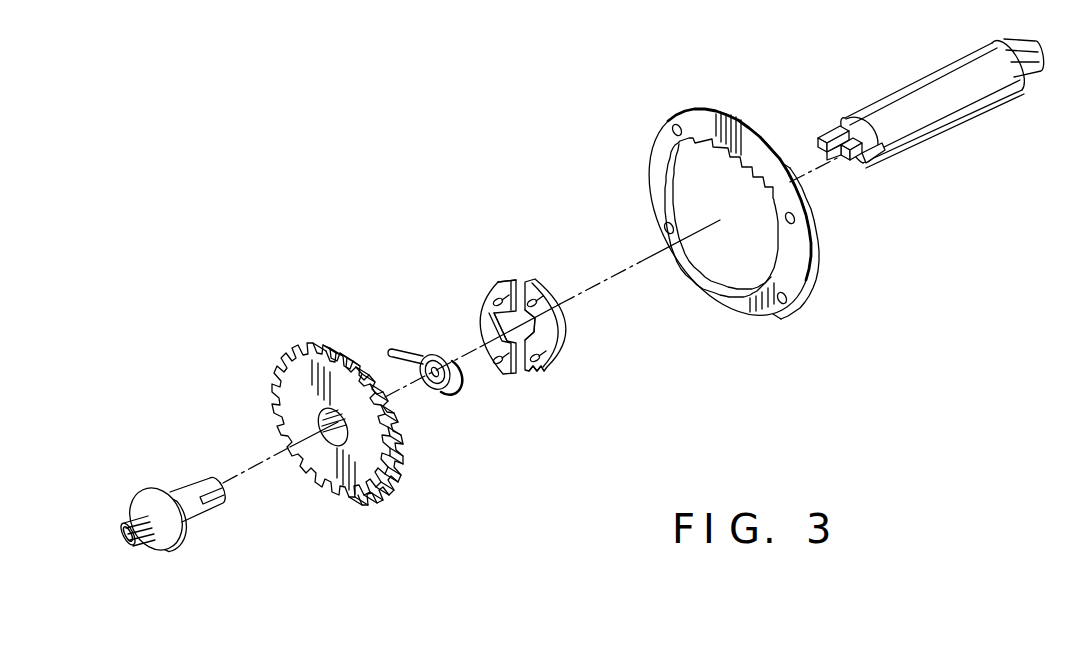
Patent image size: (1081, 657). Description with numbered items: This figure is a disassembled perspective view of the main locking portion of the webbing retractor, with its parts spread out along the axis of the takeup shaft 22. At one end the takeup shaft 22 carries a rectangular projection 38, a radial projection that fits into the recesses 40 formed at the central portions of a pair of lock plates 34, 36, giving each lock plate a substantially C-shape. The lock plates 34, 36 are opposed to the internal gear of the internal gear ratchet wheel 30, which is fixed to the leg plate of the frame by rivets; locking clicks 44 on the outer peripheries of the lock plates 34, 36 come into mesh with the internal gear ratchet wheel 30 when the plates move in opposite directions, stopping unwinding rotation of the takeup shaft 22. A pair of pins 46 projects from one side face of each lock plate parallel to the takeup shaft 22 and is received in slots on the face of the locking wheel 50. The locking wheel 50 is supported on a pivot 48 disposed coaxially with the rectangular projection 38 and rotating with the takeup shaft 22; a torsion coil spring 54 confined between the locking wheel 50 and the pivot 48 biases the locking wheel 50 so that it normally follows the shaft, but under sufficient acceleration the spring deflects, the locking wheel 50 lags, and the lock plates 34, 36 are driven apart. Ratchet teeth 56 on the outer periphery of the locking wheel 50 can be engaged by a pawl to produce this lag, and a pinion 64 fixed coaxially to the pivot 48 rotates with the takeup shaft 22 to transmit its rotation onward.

The takeup shaft 22 is at (888, 101).
The internal gear ratchet wheel 30 is at (818, 275).
The lock plate 34 is at (489, 302).
The lock plate 36 is at (556, 303).
The rectangular projection 38 is at (866, 166).
The recess 40 is at (482, 323).
The locking click 44 is at (501, 283).
The pin 46 is at (494, 298).
The pivot 48 is at (171, 517).
The locking wheel 50 is at (361, 405).
The torsion coil spring 54 is at (395, 350).
The ratchet teeth 56 is at (406, 452).
The pinion 64 is at (125, 548).